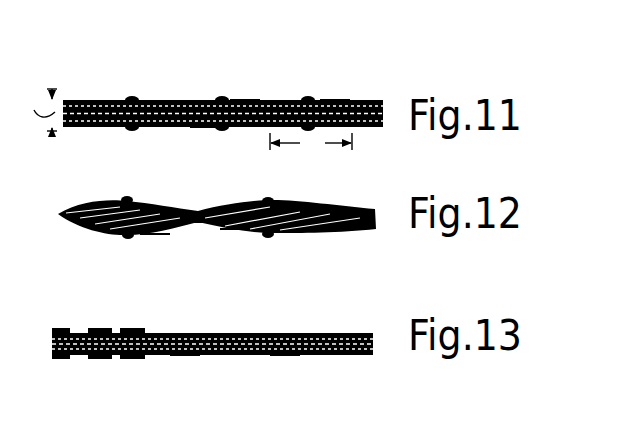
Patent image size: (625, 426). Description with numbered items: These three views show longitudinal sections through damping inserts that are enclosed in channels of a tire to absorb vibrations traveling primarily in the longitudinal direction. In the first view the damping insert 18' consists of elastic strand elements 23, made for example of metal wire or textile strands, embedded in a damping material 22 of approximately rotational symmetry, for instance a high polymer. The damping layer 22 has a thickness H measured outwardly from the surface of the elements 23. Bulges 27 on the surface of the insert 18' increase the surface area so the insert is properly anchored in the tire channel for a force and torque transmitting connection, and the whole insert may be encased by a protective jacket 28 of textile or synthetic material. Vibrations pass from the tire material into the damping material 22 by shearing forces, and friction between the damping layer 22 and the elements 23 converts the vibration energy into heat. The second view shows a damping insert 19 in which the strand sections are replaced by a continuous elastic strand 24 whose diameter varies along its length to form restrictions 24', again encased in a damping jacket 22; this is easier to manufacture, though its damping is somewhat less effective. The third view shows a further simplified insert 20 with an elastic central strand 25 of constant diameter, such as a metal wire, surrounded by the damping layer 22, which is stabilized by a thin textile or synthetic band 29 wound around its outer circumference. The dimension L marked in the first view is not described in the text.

In FIG. 11, the damping insert 18' is at (216, 76).
In FIG. 12, the damping insert 19 is at (100, 193).
In FIG. 13, the insert 20 is at (100, 318).
In FIG. 11, the damping material 22 is at (335, 100).
In FIG. 12, the damping material 22 is at (233, 231).
In FIG. 13, the damping material 22 is at (185, 357).
In FIG. 11, the elastic strand elements 23 is at (204, 128).
In FIG. 12, the continuous elastic strand 24 is at (172, 260).
In FIG. 12, the restrictions 24' is at (214, 244).
In FIG. 13, the elastic central strand 25 is at (288, 357).
In FIG. 11, the bulges 27 is at (134, 97).
In FIG. 12, the bulges 27 is at (270, 199).
In FIG. 11, the protective jacket 28 is at (245, 100).
In FIG. 13, the band 29 is at (90, 358).
In FIG. 11, the thickness H is at (38, 110).
In FIG. 11, the knot spacing L is at (311, 145).